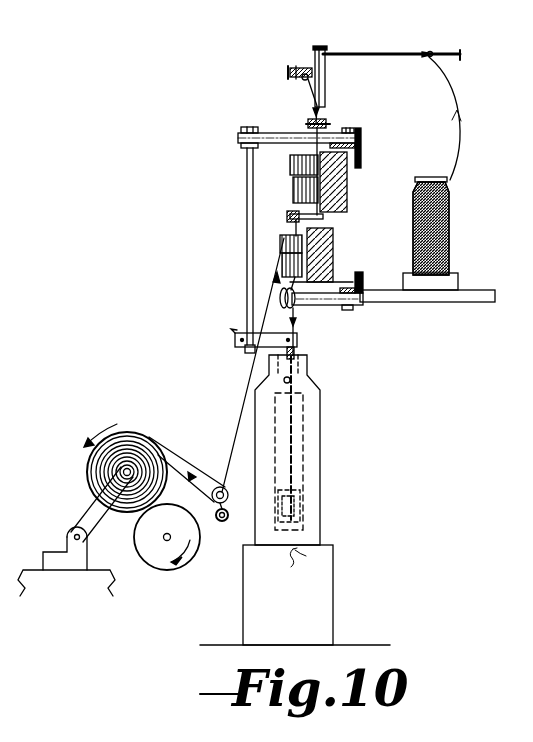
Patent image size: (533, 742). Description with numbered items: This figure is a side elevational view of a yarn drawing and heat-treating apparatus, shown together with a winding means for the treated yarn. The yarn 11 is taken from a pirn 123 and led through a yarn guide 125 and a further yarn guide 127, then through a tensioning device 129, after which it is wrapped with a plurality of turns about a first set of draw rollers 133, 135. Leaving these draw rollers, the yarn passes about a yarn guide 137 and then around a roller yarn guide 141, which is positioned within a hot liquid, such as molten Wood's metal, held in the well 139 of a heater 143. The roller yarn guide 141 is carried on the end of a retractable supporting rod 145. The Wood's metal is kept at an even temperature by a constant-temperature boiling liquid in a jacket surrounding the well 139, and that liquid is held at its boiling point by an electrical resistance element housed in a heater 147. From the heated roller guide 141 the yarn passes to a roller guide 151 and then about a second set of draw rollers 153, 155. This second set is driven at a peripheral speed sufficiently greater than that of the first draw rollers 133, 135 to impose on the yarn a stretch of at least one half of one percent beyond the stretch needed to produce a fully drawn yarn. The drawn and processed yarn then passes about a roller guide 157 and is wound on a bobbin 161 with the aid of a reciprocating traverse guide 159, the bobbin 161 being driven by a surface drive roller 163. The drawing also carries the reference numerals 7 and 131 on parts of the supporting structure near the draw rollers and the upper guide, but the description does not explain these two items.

The hatched support block 7 is at (306, 272).
The yarn 11 is at (363, 54).
The pirn 123 is at (450, 221).
The yarn guide 125 is at (442, 32).
The yarn guide 127 is at (315, 49).
The tensioning device 129 is at (311, 92).
The thread guide bracket 131 is at (324, 124).
The draw roller 133 is at (290, 165).
The draw roller 135 is at (293, 188).
The yarn guide 137 is at (323, 218).
The well 139 is at (297, 431).
The roller yarn guide 141 is at (300, 520).
The heater 143 is at (320, 457).
The retractable supporting rod 145 is at (293, 412).
The heater 147 is at (323, 596).
The roller guide 151 is at (297, 307).
The draw roller 153 is at (287, 270).
The draw roller 155 is at (283, 242).
The roller guide 157 is at (220, 487).
The reciprocating traverse guide 159 is at (160, 440).
The bobbin 161 is at (88, 473).
The surface drive roller 163 is at (170, 569).